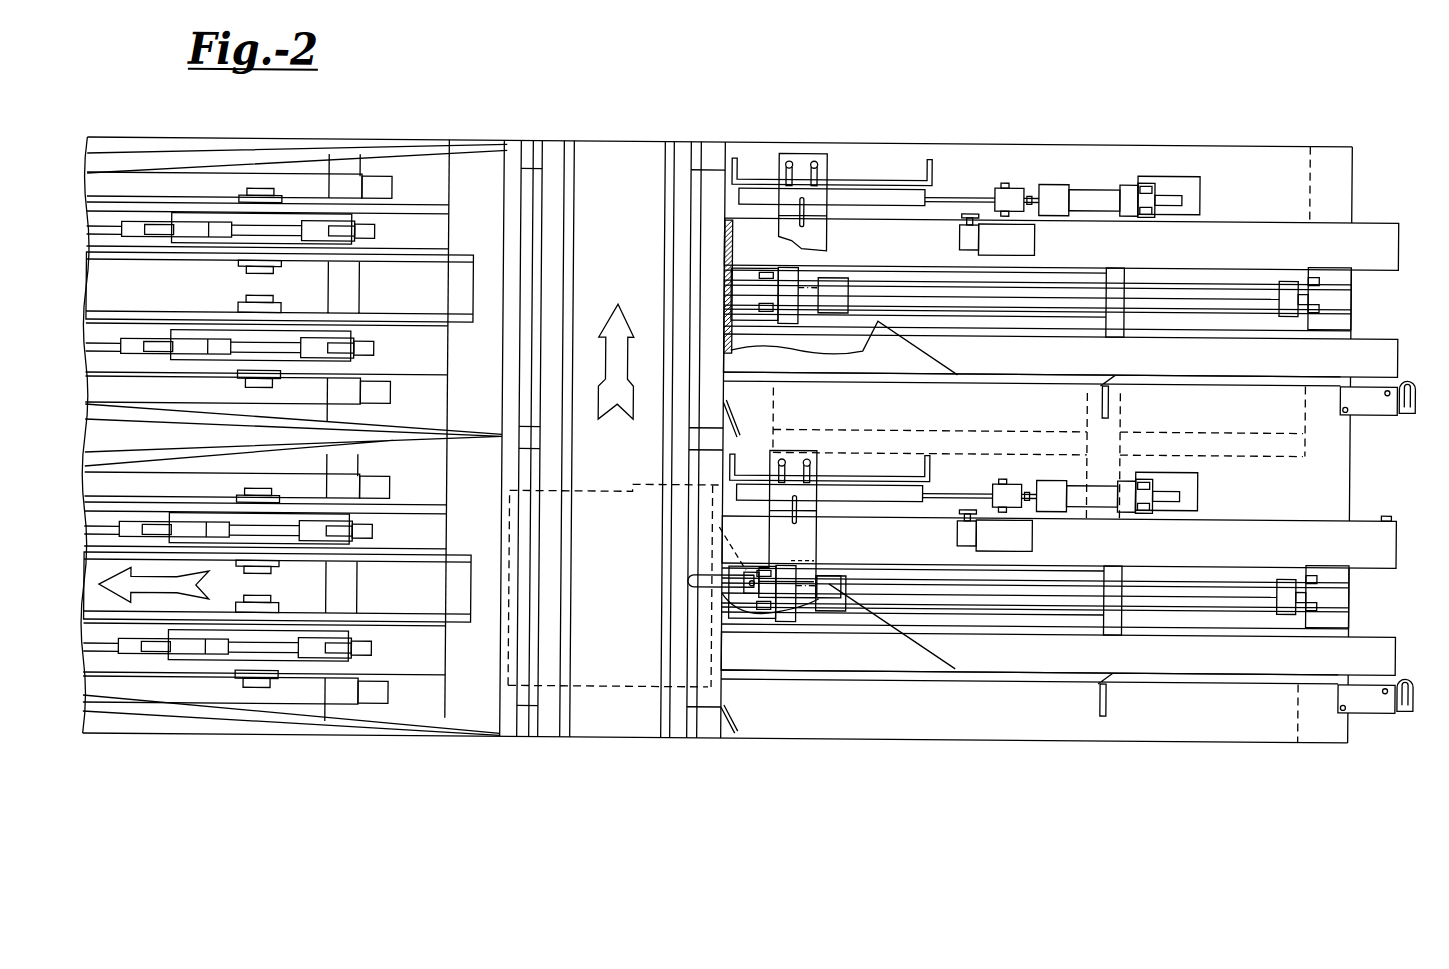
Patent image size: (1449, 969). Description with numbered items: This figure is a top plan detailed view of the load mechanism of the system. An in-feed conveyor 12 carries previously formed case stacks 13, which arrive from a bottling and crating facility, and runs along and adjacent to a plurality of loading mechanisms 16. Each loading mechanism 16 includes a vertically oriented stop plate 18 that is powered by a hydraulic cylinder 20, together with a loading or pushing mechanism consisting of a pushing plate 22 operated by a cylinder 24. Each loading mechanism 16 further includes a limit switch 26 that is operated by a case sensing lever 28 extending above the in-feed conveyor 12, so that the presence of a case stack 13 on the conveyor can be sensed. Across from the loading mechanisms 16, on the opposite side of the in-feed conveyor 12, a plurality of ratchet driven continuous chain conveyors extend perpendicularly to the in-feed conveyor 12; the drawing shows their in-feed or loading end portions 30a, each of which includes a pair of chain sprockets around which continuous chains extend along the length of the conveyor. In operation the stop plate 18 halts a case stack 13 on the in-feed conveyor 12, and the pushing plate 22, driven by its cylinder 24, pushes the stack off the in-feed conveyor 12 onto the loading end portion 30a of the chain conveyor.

The in-feed conveyor 12 is at (627, 143).
The case stacks 13 is at (605, 687).
The loading mechanism 16 is at (1398, 217).
The stop plate 18 is at (951, 194).
The hydraulic cylinder 20 is at (1083, 196).
The pushing plate 22 is at (722, 243).
The cylinder 24 is at (1165, 292).
The limit switch 26 is at (818, 587).
The case sensing lever 28 is at (687, 578).
The loading end portion 30a is at (72, 226).